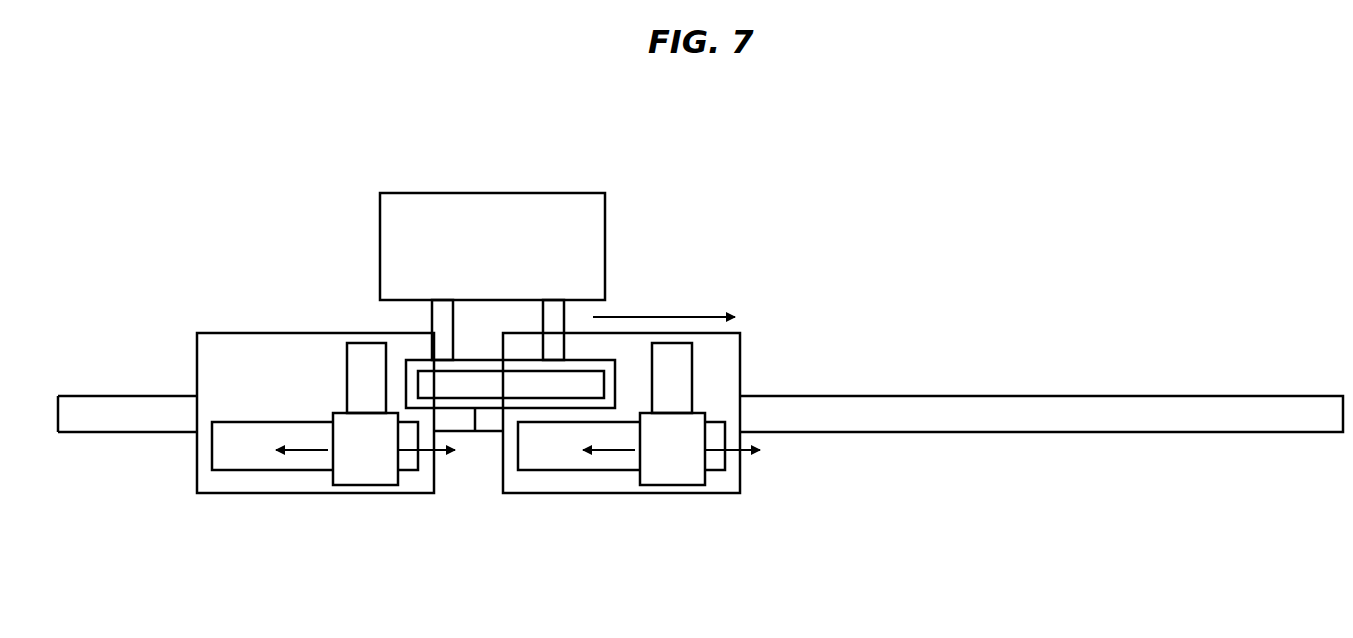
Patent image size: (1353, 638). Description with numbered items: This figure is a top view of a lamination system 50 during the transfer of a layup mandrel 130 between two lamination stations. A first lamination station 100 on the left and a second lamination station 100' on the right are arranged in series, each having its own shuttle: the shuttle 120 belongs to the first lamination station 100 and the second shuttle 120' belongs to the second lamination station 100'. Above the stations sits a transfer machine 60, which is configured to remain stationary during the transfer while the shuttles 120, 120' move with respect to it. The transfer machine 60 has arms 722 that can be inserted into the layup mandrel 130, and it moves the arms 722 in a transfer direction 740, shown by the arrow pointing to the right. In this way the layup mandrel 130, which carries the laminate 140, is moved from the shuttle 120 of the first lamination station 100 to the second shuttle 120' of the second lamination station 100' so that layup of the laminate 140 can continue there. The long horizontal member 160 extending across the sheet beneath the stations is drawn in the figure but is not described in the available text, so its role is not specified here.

The lamination system 50 is at (880, 133).
The transfer machine 60 is at (605, 228).
The arms 722 is at (543, 318).
The laminate 140 is at (585, 361).
The layup mandrel 130 is at (488, 410).
The rail 160 is at (1197, 368).
The shuttle 120 is at (315, 389).
The second shuttle 120' is at (658, 413).
The first lamination station 100 is at (333, 467).
The second lamination station 100' is at (639, 467).
The transfer direction 740 is at (690, 315).